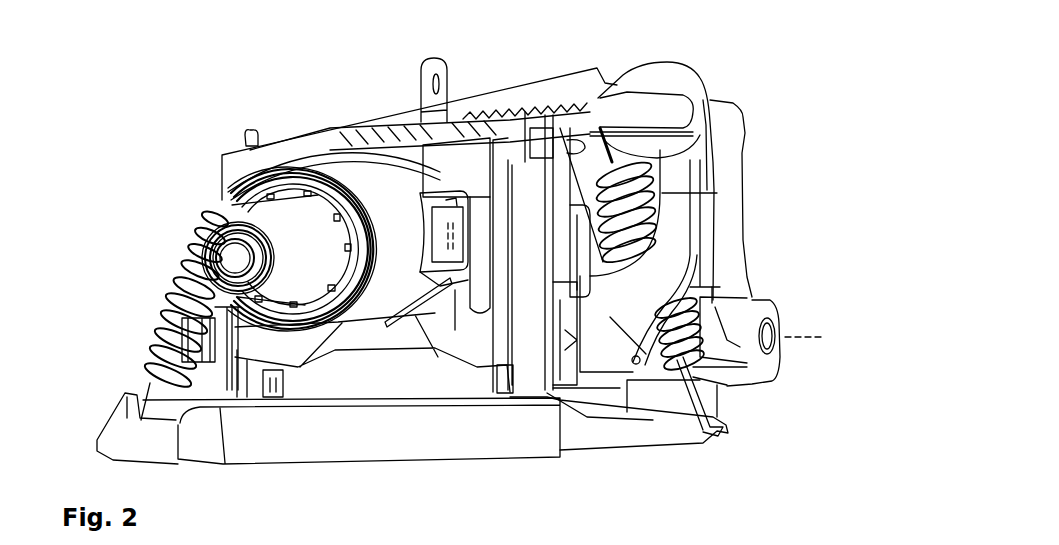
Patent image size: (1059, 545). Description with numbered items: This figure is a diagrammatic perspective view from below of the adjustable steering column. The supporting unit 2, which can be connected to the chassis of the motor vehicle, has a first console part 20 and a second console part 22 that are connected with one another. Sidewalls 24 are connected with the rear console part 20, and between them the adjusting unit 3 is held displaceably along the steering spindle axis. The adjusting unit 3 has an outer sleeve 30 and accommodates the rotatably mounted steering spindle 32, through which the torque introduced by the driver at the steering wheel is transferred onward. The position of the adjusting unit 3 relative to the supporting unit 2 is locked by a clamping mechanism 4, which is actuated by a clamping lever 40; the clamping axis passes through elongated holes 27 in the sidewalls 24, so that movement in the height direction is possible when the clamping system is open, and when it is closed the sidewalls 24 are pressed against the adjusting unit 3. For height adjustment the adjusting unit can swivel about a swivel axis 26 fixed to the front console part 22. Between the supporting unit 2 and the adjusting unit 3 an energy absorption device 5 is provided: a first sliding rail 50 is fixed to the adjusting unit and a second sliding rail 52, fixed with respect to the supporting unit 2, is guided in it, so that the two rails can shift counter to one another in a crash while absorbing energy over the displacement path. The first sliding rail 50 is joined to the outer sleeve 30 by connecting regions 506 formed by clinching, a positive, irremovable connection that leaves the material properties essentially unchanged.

The supporting unit 2 is at (272, 442).
The adjusting unit 3 is at (350, 168).
The clamping mechanism 4 is at (458, 358).
The energy absorption device 5 is at (452, 193).
The first console part 20 is at (430, 193).
The second console part 22 is at (770, 367).
The sidewalls 24 is at (526, 302).
The swivel axis 26 is at (807, 340).
The elongated holes 27 is at (535, 163).
The outer sleeve 30 is at (357, 180).
The steering spindle 32 is at (247, 220).
The clamping lever 40 is at (726, 438).
The first sliding rail 50 is at (434, 282).
The second sliding rail 52 is at (450, 275).
The connecting regions 506 is at (433, 197).